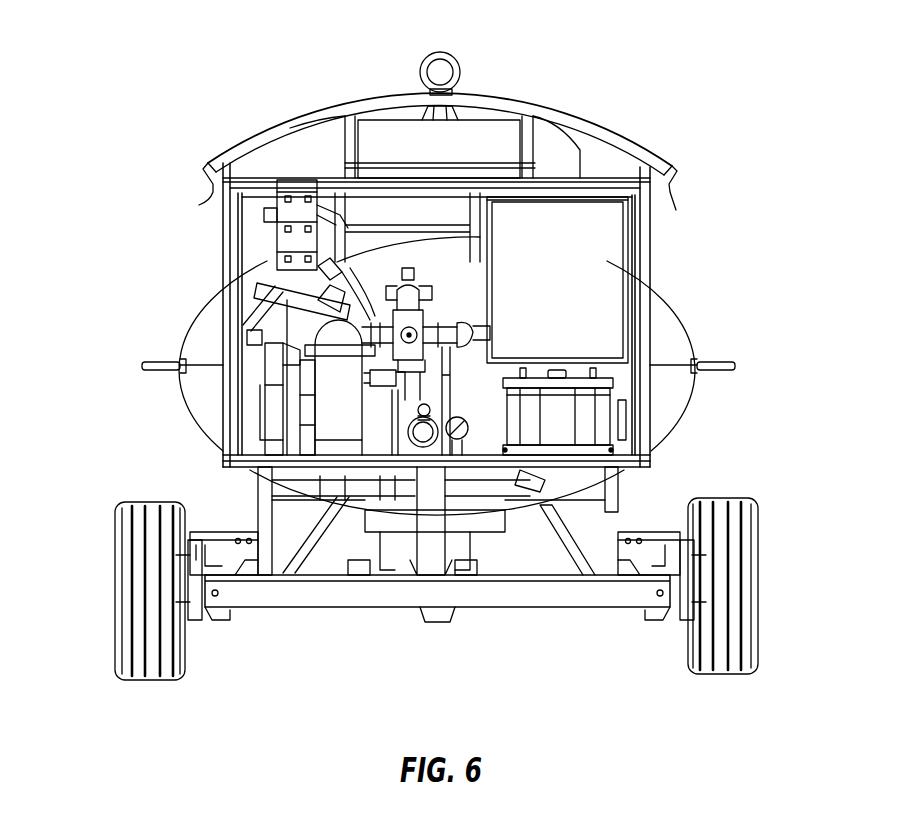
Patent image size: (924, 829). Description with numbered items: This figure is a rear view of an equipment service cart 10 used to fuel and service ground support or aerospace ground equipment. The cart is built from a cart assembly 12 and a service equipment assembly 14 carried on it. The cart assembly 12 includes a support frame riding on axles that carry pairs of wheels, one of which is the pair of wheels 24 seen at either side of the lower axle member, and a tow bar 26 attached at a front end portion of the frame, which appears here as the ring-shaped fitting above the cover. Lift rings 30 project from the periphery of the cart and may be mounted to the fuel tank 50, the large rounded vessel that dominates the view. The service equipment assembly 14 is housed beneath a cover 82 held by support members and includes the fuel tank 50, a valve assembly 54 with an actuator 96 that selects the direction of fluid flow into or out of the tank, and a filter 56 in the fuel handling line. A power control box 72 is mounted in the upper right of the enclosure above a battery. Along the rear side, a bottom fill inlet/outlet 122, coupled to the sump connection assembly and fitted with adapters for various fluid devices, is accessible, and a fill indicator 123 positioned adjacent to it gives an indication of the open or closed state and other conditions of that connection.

The equipment service cart 10 is at (810, 162).
The cart assembly 12 is at (566, 616).
The service equipment assembly 14 is at (638, 133).
The second pair of wheels 24 is at (123, 594).
The tow bar 26 is at (421, 68).
The lift rings 30 is at (168, 362).
The fuel tank 50 is at (682, 305).
The valve assembly 54 is at (434, 304).
The filter 56 is at (303, 470).
The power control box 72 is at (612, 228).
The cover 82 is at (548, 117).
The actuator 96 is at (487, 332).
The bottom fill inlet/outlet 122 is at (432, 405).
The fill indicator 123 is at (460, 440).